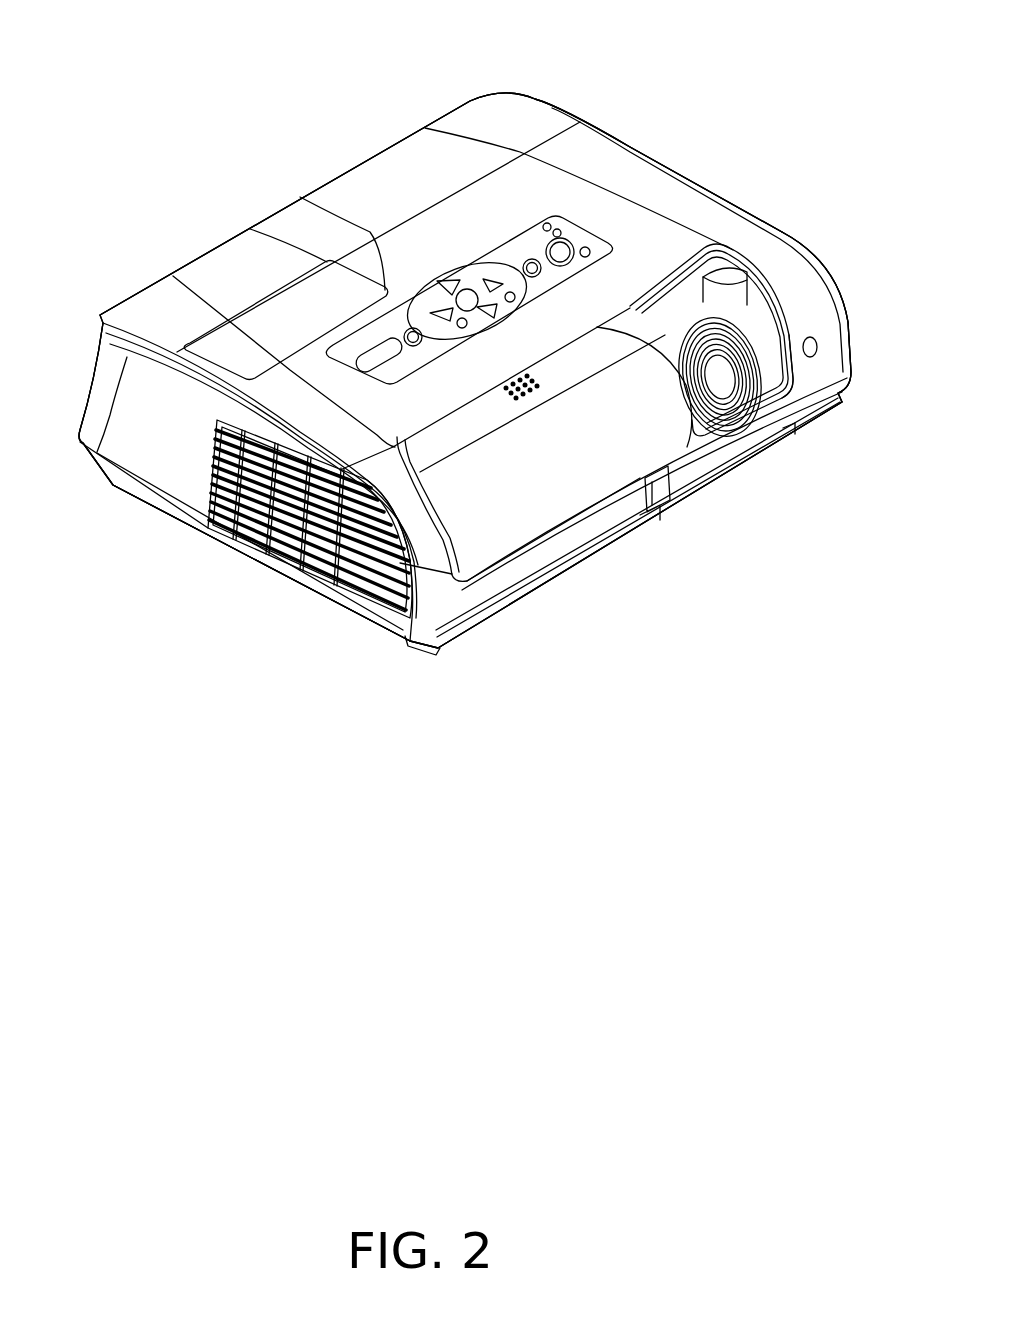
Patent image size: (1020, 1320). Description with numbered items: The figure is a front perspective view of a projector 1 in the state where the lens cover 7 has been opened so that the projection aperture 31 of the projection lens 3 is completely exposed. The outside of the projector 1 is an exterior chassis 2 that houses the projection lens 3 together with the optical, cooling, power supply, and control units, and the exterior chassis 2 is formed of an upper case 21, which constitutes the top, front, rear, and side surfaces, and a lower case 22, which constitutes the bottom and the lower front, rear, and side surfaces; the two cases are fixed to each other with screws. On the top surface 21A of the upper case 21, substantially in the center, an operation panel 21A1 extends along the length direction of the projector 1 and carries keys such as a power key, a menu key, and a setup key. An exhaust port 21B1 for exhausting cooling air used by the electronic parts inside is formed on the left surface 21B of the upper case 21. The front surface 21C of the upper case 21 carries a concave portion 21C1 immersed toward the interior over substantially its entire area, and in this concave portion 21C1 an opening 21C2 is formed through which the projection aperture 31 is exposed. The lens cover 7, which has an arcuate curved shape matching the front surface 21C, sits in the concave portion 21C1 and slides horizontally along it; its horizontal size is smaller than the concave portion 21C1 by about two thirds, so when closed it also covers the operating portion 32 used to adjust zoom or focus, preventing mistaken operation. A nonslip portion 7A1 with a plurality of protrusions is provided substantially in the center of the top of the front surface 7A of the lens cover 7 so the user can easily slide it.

The projector 1 is at (672, 74).
The exterior chassis 2 is at (553, 100).
The upper case 21 is at (634, 168).
The top surface 21A is at (377, 174).
The operation panel 21A1 is at (493, 256).
The left surface 21B is at (158, 470).
The exhaust port 21B1 is at (287, 558).
The front surface 21C is at (800, 288).
The concave portion 21C1 is at (792, 377).
The opening 21C2 is at (670, 307).
The lower case 22 is at (437, 637).
The projection lens 3 is at (745, 437).
The projection aperture 31 is at (710, 455).
The operating portion 32 is at (720, 268).
The lens cover 7 is at (592, 486).
The front surface 7A is at (493, 537).
The nonslip portion 7A1 is at (546, 386).